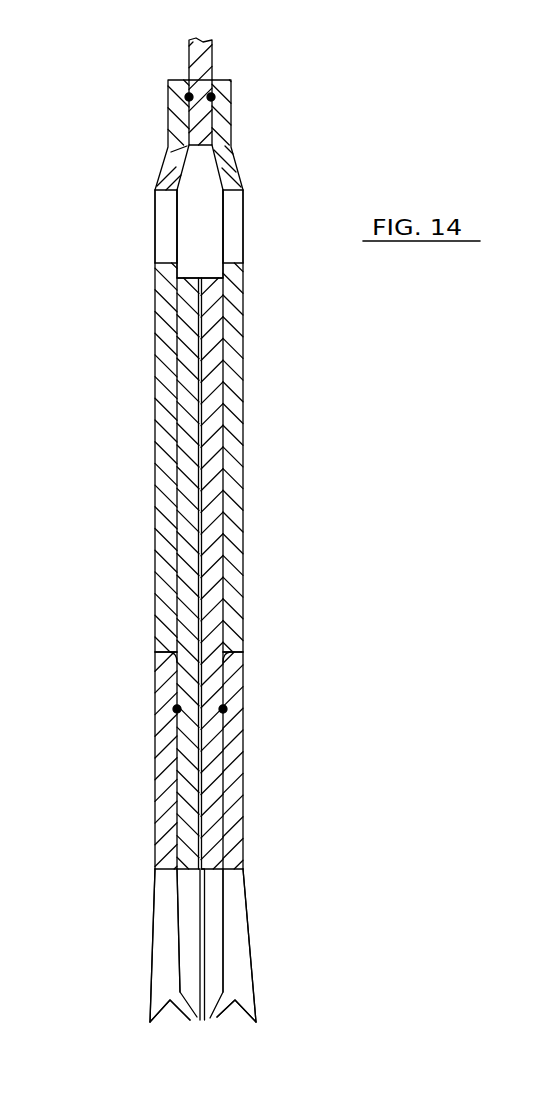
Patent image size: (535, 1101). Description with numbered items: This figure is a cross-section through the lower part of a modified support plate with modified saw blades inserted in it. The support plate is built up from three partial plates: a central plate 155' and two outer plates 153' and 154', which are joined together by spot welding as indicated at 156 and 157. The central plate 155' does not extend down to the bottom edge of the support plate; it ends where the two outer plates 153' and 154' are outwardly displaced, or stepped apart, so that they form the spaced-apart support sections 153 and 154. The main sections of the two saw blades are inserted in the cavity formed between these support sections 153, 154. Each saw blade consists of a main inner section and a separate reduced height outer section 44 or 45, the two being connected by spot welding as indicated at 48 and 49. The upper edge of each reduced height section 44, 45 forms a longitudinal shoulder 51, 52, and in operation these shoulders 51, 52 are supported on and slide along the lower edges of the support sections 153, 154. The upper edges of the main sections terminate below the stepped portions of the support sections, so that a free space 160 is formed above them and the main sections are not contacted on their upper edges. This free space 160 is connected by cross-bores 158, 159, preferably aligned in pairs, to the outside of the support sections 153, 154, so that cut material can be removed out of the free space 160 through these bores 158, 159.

The central partial plate 155' is at (266, 76).
The spot weld 157 is at (189, 97).
The spot weld 156 is at (211, 97).
The outer partial plate 154' is at (126, 135).
The outer partial plate 153' is at (279, 116).
The free space 160 is at (182, 192).
The cross-bore 159 is at (165, 212).
The cross-bore 158 is at (232, 212).
The support section 154 is at (114, 457).
The support section 153 is at (286, 457).
The longitudinal shoulder 52 is at (168, 656).
The longitudinal shoulder 51 is at (233, 657).
The spot weld 49 is at (177, 709).
The spot weld 48 is at (224, 710).
The reduced height outer section 45 is at (167, 766).
The reduced height outer section 44 is at (236, 773).